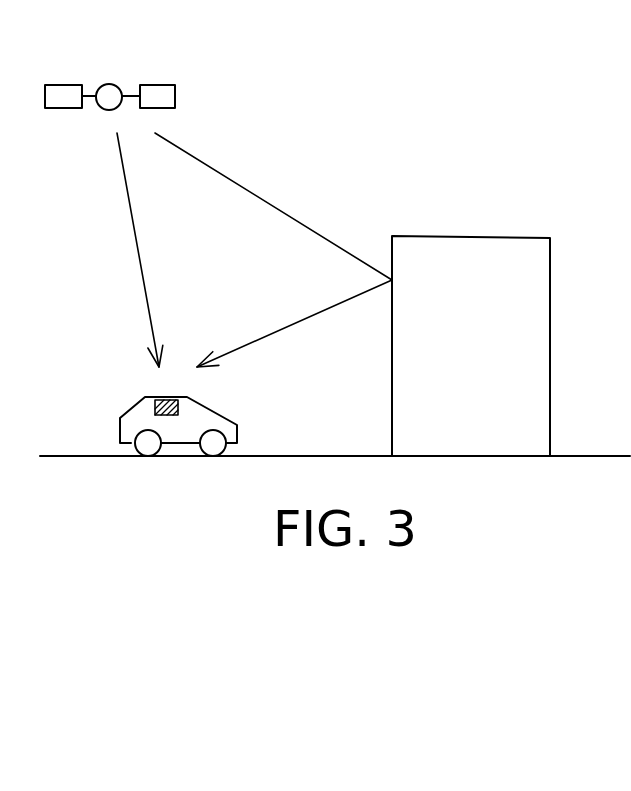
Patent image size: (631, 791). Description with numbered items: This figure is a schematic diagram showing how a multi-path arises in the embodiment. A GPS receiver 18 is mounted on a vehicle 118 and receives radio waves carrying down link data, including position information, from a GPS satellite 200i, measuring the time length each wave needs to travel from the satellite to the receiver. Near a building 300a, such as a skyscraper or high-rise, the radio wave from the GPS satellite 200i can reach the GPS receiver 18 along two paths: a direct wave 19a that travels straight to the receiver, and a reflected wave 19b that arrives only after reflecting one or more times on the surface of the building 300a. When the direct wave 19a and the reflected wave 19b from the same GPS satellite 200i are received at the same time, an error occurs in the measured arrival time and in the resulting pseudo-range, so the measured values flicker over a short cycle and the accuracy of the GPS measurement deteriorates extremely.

The GPS satellite 200i is at (113, 84).
The direct wave 19a is at (146, 278).
The reflected wave 19b is at (270, 208).
The building 300a is at (528, 238).
The vehicle 118 is at (212, 407).
The GPS receiver 18 is at (167, 397).